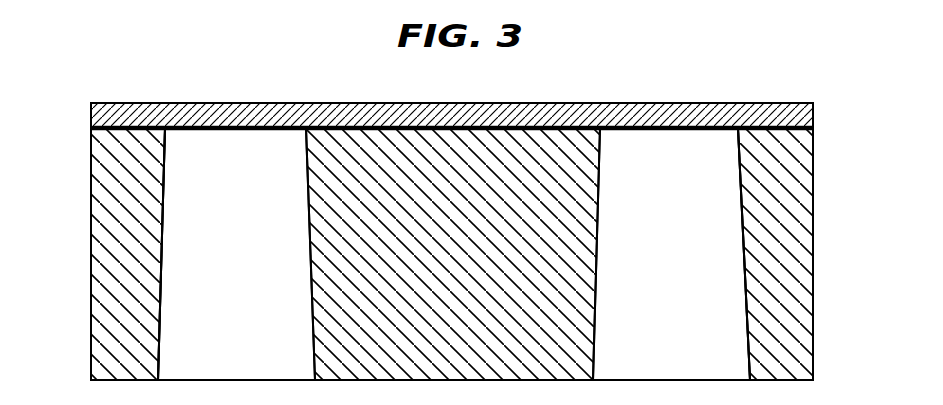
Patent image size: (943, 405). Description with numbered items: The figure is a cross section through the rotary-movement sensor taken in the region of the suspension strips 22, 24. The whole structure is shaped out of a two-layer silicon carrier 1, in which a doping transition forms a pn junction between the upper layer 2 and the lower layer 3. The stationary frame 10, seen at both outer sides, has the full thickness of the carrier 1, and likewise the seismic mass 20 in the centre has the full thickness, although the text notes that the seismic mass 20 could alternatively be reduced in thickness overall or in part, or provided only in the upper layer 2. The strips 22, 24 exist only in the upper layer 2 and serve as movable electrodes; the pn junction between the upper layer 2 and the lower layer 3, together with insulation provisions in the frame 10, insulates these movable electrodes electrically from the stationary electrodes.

The silicon carrier 1 is at (88, 103).
The upper layer 2 is at (813, 108).
The lower layer 3 is at (808, 247).
The frame 10 is at (167, 97).
The seismic mass 20 is at (470, 265).
The suspension strip 22 is at (735, 97).
The suspension strip 24 is at (303, 97).